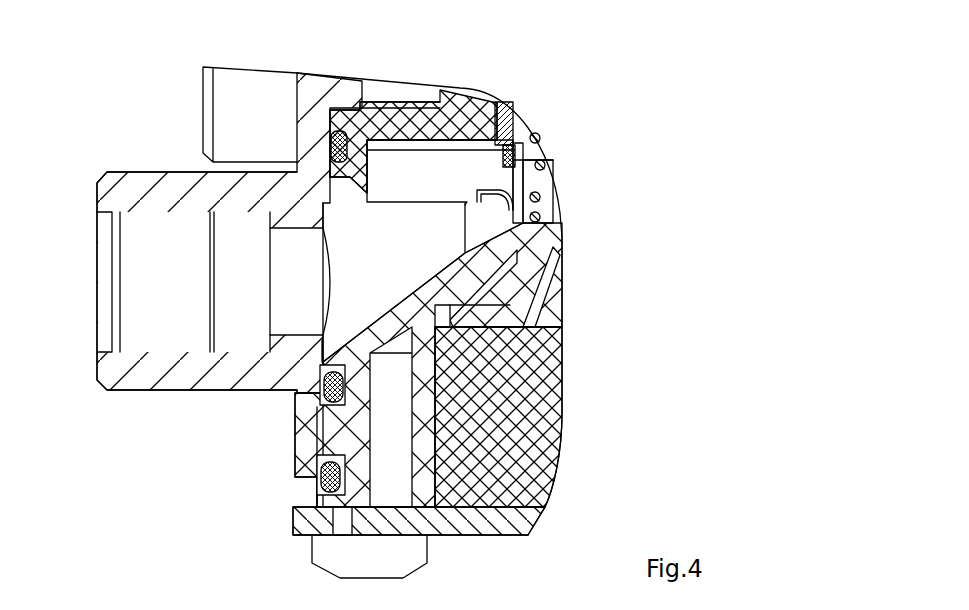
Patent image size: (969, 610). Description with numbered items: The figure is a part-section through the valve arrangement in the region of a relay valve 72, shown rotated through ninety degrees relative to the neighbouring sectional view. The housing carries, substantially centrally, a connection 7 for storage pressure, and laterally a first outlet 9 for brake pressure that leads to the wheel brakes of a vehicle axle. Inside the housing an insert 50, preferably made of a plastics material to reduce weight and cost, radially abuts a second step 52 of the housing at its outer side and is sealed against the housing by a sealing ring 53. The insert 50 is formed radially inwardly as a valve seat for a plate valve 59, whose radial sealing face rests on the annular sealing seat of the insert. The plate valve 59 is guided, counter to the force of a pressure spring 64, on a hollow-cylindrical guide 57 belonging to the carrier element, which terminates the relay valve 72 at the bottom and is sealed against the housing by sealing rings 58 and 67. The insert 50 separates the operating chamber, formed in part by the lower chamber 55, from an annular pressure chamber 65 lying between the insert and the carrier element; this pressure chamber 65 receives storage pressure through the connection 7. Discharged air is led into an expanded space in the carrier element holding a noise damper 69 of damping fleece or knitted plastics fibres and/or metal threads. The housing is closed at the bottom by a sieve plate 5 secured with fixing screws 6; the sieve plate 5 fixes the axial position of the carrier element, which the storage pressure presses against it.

The sieve plate 5 is at (525, 523).
The fixing screws 6 is at (312, 556).
The connection for storage pressure 7 is at (135, 287).
The first outlet 9 is at (205, 74).
The insert 50 is at (423, 88).
The second step 52 is at (342, 100).
The sealing ring 53 is at (330, 140).
The lower chamber 55 is at (388, 98).
The hollow-cylindrical guide 57 is at (520, 183).
The sealing ring 58 is at (322, 400).
The plate valve 59 is at (505, 100).
The pressure spring 64 is at (548, 197).
The pressure chamber 65 is at (410, 262).
The sealing ring 67 is at (318, 478).
The noise damper 69 is at (552, 413).
The relay valve 72 is at (550, 68).